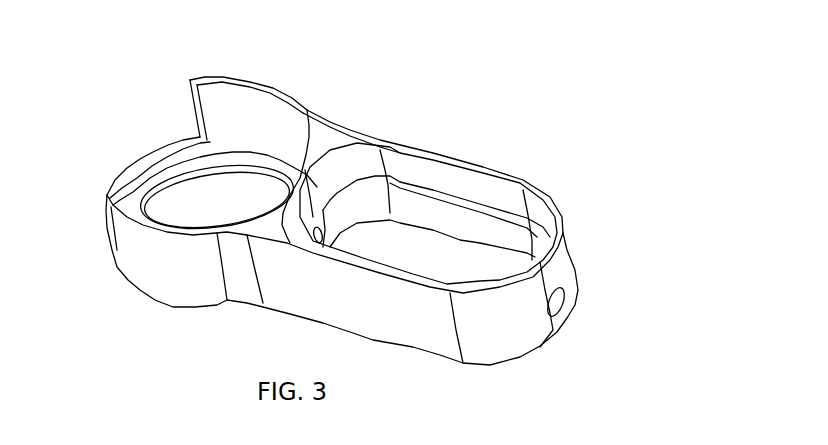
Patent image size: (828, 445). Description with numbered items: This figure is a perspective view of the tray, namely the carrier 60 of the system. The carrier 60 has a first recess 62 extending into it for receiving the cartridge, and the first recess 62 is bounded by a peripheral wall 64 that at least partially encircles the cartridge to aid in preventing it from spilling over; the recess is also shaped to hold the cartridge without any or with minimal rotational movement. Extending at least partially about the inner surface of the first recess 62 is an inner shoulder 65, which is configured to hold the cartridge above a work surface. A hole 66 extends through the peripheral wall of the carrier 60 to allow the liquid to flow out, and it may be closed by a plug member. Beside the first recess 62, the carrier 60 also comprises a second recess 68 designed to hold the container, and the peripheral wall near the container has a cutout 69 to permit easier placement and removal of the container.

The carrier 60 is at (562, 243).
The first recess 62 is at (470, 183).
The peripheral wall 64 is at (380, 298).
The inner shoulder 65 is at (422, 196).
The hole 66 is at (562, 302).
The second recess 68 is at (221, 113).
The cutout 69 is at (146, 160).